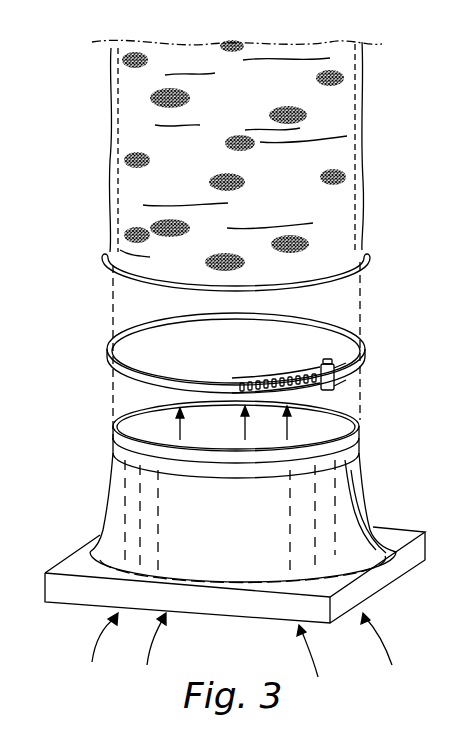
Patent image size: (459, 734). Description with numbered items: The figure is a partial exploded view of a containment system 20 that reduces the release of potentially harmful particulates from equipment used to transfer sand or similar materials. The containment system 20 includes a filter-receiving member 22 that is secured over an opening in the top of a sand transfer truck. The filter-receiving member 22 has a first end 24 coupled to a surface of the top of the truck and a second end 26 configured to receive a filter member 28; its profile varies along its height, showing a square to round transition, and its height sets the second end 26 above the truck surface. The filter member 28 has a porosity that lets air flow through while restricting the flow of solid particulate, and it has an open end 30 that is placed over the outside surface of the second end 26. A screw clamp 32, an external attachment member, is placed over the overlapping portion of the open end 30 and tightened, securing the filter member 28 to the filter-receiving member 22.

The containment system 20 is at (96, 93).
The filter-receiving member 22 is at (118, 487).
The first end 24 is at (393, 572).
The second end 26 is at (352, 422).
The filter member 28 is at (365, 165).
The open end 30 is at (345, 278).
The screw clamp 32 is at (107, 356).